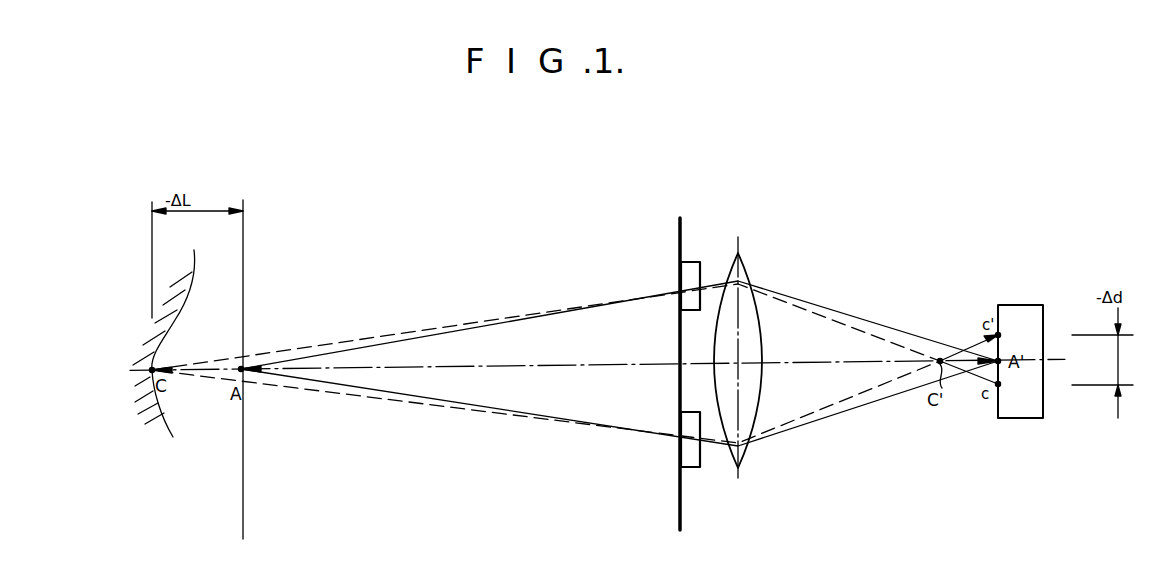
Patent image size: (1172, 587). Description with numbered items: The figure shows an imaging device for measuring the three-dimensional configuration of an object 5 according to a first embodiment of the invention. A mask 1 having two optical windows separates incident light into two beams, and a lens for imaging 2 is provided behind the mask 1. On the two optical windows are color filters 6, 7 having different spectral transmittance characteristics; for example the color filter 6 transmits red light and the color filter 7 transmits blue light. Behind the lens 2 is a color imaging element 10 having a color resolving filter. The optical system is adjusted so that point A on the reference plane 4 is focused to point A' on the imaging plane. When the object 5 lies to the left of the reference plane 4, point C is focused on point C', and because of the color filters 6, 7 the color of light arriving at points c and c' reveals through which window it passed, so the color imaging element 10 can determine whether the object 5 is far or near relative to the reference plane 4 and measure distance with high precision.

The mask 1 is at (680, 218).
The lens for imaging 2 is at (752, 268).
The reference plane 4 is at (243, 248).
The object 5 is at (164, 427).
The color filter 6 is at (691, 262).
The color filter 7 is at (700, 455).
The color imaging element 10 is at (1030, 305).